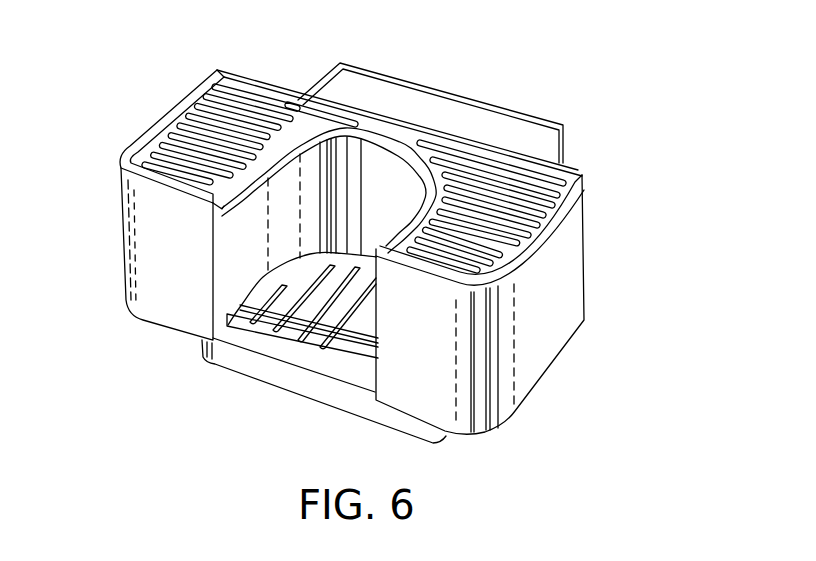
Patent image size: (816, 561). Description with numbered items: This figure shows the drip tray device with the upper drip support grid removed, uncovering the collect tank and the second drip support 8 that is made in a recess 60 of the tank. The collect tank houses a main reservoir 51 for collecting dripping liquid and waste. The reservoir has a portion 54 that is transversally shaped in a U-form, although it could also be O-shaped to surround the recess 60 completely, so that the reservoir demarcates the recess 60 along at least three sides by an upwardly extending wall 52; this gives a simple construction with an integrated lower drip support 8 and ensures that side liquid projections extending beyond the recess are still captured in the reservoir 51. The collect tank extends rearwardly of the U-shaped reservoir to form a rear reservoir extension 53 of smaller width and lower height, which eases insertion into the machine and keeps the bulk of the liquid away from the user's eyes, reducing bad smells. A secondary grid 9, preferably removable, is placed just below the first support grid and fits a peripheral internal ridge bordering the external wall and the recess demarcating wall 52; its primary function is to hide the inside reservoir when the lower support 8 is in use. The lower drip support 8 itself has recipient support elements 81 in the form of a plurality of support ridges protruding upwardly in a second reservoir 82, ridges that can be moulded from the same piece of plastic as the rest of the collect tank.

The second drip support 8 is at (213, 370).
The secondary grid 9 is at (508, 170).
The main reservoir 51 is at (472, 172).
The upwardly extending wall 52 is at (140, 206).
The rear reservoir extension 53 is at (497, 102).
The portion of the reservoir 54 is at (553, 333).
The recess 60 is at (313, 183).
The recipient support elements 81 is at (303, 295).
The second reservoir 82 is at (368, 300).